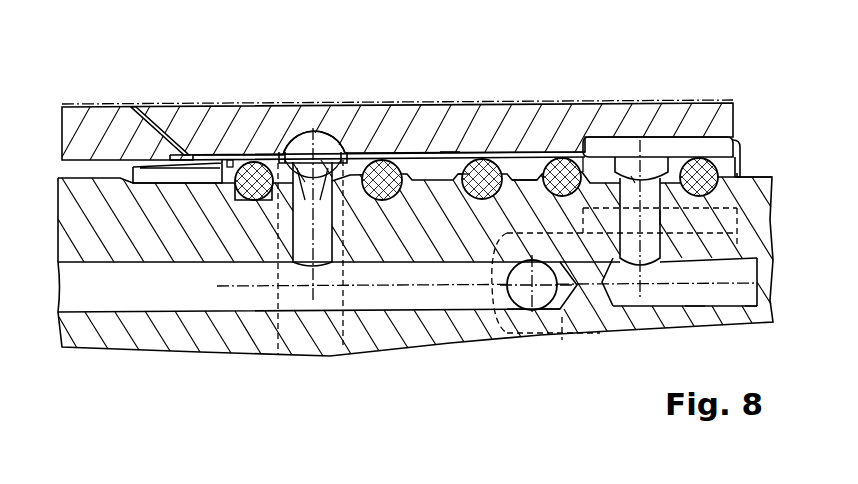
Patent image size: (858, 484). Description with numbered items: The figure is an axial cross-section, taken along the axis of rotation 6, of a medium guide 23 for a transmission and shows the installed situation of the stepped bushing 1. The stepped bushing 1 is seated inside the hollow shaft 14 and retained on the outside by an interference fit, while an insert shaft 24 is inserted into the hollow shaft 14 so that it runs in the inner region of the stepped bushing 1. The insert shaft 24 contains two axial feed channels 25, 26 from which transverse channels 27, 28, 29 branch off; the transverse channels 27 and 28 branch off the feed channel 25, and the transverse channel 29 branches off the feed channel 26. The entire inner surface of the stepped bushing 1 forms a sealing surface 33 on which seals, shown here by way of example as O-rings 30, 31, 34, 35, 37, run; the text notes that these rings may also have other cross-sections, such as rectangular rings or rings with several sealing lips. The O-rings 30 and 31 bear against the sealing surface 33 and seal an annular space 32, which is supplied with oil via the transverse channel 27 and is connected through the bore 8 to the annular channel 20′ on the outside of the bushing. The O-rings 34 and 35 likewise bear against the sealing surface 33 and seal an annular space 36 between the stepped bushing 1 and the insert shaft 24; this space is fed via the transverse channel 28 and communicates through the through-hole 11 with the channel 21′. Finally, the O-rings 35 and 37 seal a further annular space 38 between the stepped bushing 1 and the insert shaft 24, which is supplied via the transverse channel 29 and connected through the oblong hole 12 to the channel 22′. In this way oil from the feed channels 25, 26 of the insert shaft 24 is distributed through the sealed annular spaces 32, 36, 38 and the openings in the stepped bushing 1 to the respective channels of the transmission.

The stepped bushing 1 is at (478, 152).
The axis of rotation 6 is at (250, 285).
The bore 8 is at (315, 185).
The through-hole 11 is at (545, 295).
The oblong hole 12 is at (637, 167).
The hollow shaft 14 is at (403, 127).
The annular channel 20′ is at (313, 147).
The channel 21′ is at (562, 328).
The channel 22′ is at (720, 127).
The medium guide 23 is at (551, 92).
The insert shaft 24 is at (753, 177).
The feed channel 25 is at (207, 298).
The feed channel 26 is at (753, 267).
The transverse channel 27 is at (247, 153).
The transverse channel 28 is at (508, 283).
The transverse channel 29 is at (695, 306).
The O-ring 30 is at (215, 123).
The O-ring 31 is at (380, 163).
The annular space 32 is at (333, 170).
The sealing surface 33 is at (453, 167).
The O-ring 34 is at (467, 192).
The O-ring 35 is at (652, 217).
The annular space 36 is at (522, 172).
The O-ring 37 is at (753, 307).
The annular space 38 is at (603, 173).